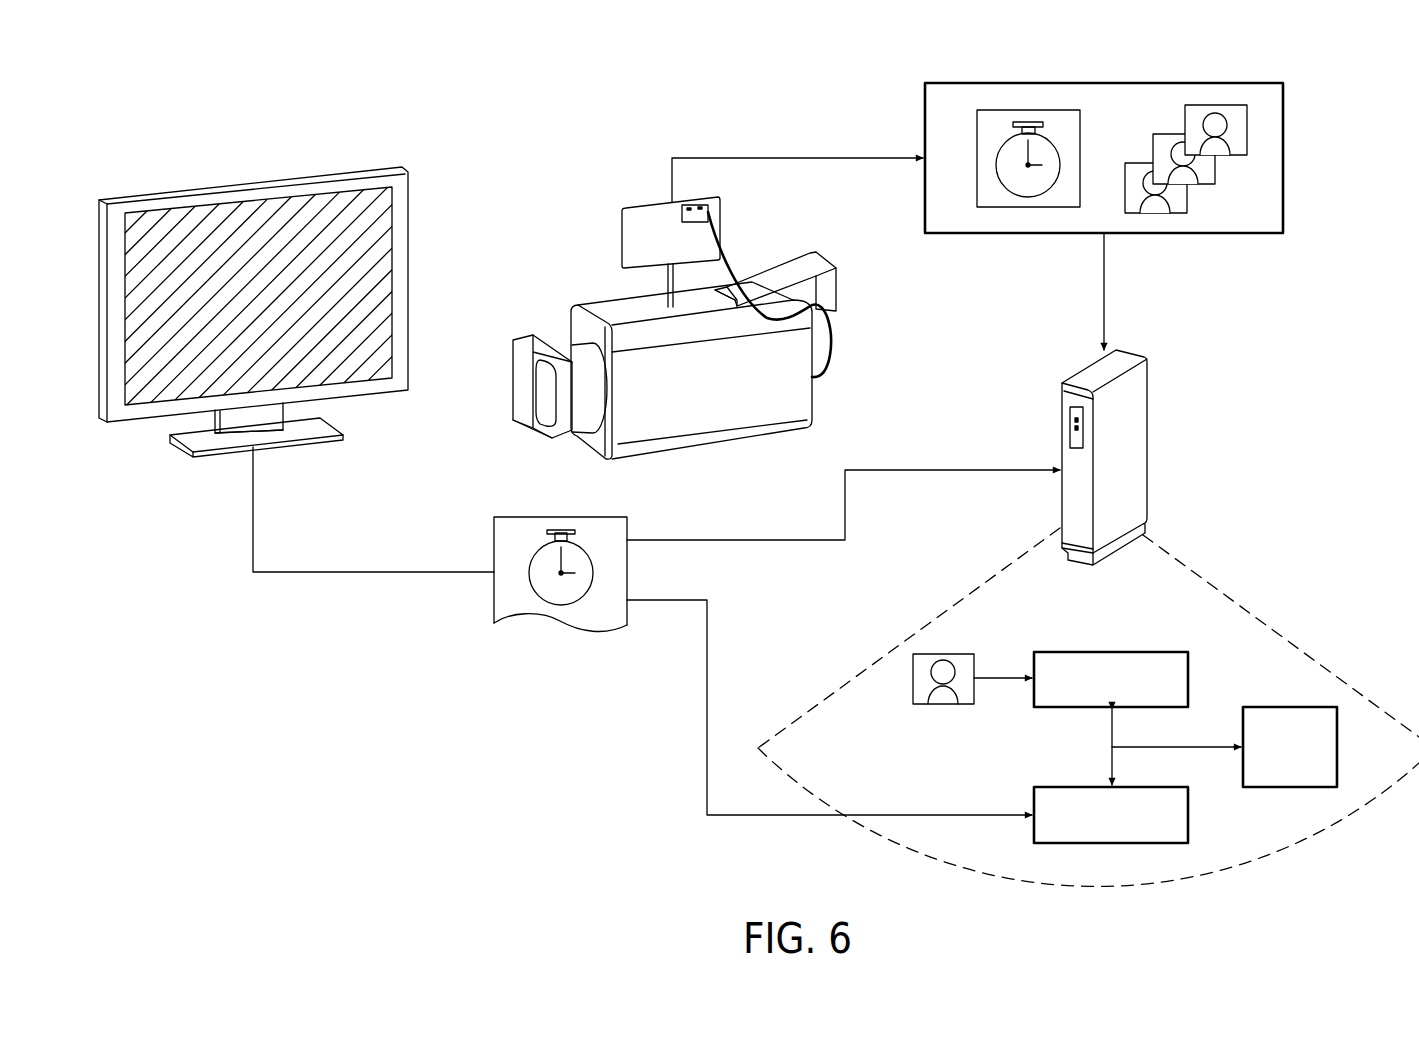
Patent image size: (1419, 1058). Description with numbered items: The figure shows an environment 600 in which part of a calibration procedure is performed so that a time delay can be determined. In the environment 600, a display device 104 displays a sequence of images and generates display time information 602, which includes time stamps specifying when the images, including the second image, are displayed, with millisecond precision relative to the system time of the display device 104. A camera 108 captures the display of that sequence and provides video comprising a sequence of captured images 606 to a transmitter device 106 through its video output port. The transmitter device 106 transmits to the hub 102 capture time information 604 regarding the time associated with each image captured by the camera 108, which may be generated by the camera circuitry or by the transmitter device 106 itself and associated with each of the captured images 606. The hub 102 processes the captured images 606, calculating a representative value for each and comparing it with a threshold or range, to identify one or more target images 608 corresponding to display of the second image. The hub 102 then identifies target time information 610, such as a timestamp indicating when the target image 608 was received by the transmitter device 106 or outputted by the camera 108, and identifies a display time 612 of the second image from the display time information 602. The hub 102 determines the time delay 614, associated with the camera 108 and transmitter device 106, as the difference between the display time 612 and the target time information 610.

The environment 600 is at (759, 464).
The hub 102 is at (1175, 402).
The display device 104 is at (430, 186).
The transmitter device 106 is at (673, 250).
The camera 108 is at (728, 402).
The display time information 602 is at (480, 532).
The capture time information 604 is at (1030, 110).
The captured images 606 is at (1156, 117).
The target image 608 is at (910, 678).
The target time information 610 is at (1085, 651).
The display time 612 is at (1085, 786).
The time delay 614 is at (1337, 728).